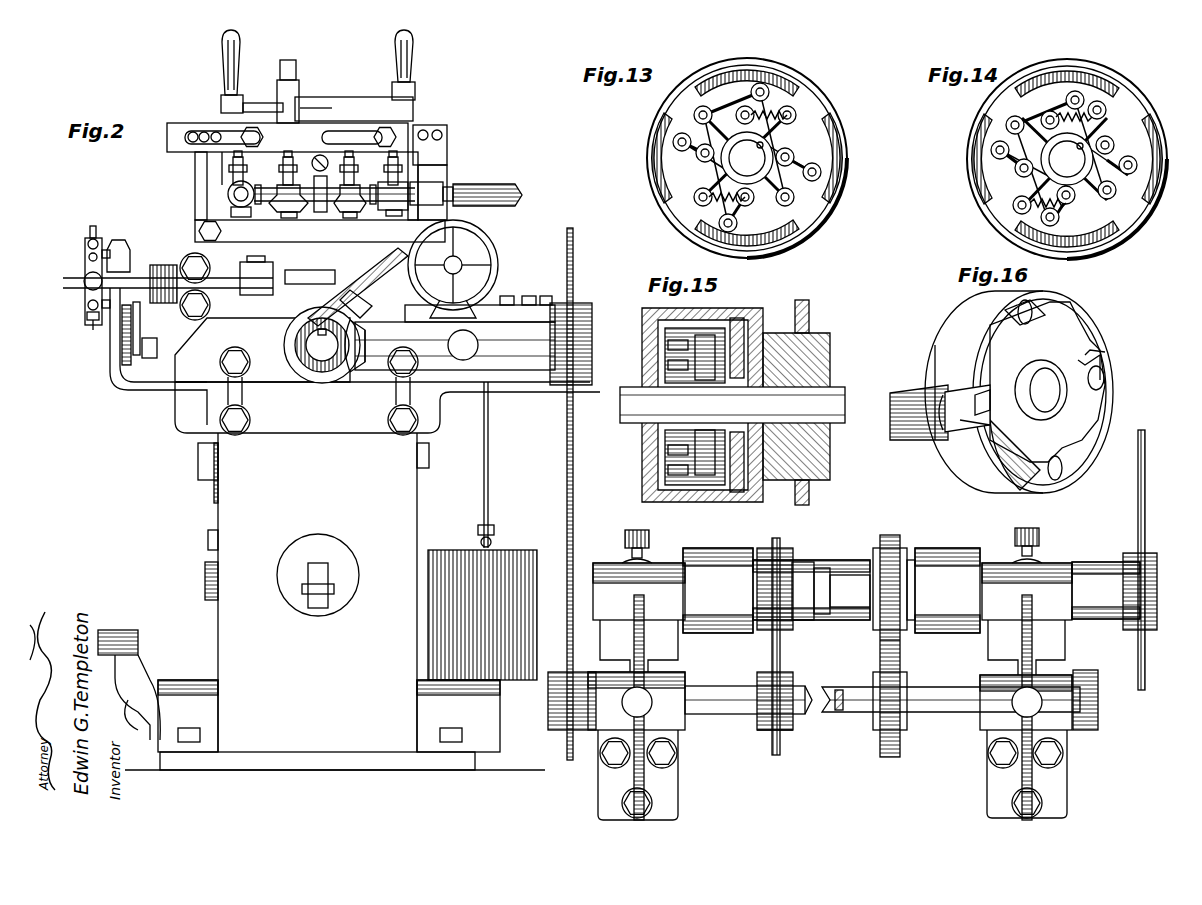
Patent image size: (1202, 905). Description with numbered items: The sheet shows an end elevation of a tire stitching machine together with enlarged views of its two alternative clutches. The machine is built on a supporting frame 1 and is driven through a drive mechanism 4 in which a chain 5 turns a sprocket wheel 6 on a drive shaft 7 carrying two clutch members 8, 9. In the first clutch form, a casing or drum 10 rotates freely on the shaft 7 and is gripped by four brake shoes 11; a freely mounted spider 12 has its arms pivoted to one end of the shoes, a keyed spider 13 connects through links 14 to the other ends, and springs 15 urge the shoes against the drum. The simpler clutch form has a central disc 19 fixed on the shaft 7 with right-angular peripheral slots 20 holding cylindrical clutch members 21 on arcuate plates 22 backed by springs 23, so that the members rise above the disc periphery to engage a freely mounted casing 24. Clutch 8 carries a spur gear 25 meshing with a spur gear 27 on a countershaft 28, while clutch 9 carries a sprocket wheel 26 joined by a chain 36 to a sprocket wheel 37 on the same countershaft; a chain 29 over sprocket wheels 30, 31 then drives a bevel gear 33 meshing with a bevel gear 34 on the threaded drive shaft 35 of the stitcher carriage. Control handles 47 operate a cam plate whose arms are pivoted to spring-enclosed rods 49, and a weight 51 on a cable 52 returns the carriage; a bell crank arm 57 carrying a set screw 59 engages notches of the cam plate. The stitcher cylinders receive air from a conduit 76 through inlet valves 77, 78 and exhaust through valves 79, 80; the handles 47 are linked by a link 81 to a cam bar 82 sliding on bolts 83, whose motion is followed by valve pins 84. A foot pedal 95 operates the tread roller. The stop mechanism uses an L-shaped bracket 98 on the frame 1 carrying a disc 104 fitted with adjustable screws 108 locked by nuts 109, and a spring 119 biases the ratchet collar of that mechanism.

In FIG. 2, the supporting frame 1 is at (250, 503).
In FIG. 2, the drive mechanism 4 is at (822, 759).
In FIG. 2, the chain 5 is at (1138, 500).
In FIG. 2, the sprocket wheel 6 is at (1128, 555).
In FIG. 2, the drive shaft 7 is at (840, 570).
In FIG. 13, the drive shaft 7 is at (747, 158).
In FIG. 14, the drive shaft 7 is at (1067, 159).
In FIG. 15, the drive shaft 7 is at (835, 393).
In FIG. 16, the drive shaft 7 is at (900, 393).
In FIG. 2, the clutch member 8 is at (948, 552).
In FIG. 2, the clutch member 9 is at (718, 560).
In FIG. 13, the casing or drum 10 is at (818, 90).
In FIG. 14, the casing or drum 10 is at (1125, 92).
In FIG. 13, the brake shoes 11 is at (730, 85).
In FIG. 14, the brake shoes 11 is at (1112, 226).
In FIG. 15, the brake shoes 11 is at (745, 312).
In FIG. 13, the spider 12 is at (762, 228).
In FIG. 14, the spider 12 is at (1030, 190).
In FIG. 15, the spider 12 is at (745, 498).
In FIG. 13, the spider 13 is at (780, 150).
In FIG. 14, the spider 13 is at (1100, 130).
In FIG. 13, the links 14 is at (715, 205).
In FIG. 14, the links 14 is at (1120, 140).
In FIG. 15, the links 14 is at (688, 485).
In FIG. 13, the springs 15 is at (780, 102).
In FIG. 14, the springs 15 is at (1085, 105).
In FIG. 15, the springs 15 is at (650, 356).
In FIG. 16, the central disc 19 is at (1058, 332).
In FIG. 16, the peripheral slots 20 is at (1035, 300).
In FIG. 16, the cylindrical clutch members 21 is at (990, 395).
In FIG. 16, the arcuate plates 22 is at (1000, 345).
In FIG. 16, the springs 23 is at (1085, 355).
In FIG. 16, the casing 24 is at (1113, 405).
In FIG. 2, the spur gear 25 is at (890, 535).
In FIG. 2, the sprocket wheel 26 is at (782, 548).
In FIG. 15, the sprocket wheel 26 is at (830, 330).
In FIG. 2, the spur gear 27 is at (900, 665).
In FIG. 2, the countershaft 28 is at (945, 712).
In FIG. 2, the chain 29 is at (573, 488).
In FIG. 2, the sprocket wheel 30 is at (560, 732).
In FIG. 2, the sprocket wheel 31 is at (586, 300).
In FIG. 2, the bevel gear 33 is at (346, 378).
In FIG. 2, the bevel gear 34 is at (310, 378).
In FIG. 2, the threaded drive shaft 35 is at (316, 350).
In FIG. 2, the chain 36 is at (782, 648).
In FIG. 2, the sprocket wheel 37 is at (762, 735).
In FIG. 2, the control handles 47 is at (240, 50).
In FIG. 2, the rods 49 is at (170, 265).
In FIG. 2, the weight 51 is at (450, 562).
In FIG. 2, the cable 52 is at (484, 435).
In FIG. 2, the bell crank arm 57 is at (62, 274).
In FIG. 2, the set screw 59 is at (86, 290).
In FIG. 2, the air conduit 76 is at (500, 185).
In FIG. 2, the inlet valve 77 is at (420, 193).
In FIG. 2, the inlet valve 78 is at (228, 191).
In FIG. 2, the exhaust valve 79 is at (288, 212).
In FIG. 2, the exhaust valve 80 is at (362, 212).
In FIG. 2, the link 81 is at (362, 97).
In FIG. 2, the cam bar 82 is at (180, 121).
In FIG. 2, the bolts 83 is at (265, 137).
In FIG. 2, the pins 84 is at (232, 158).
In FIG. 2, the foot pedal 95 is at (125, 628).
In FIG. 2, the bracket 98 is at (168, 400).
In FIG. 2, the disc 104 is at (88, 318).
In FIG. 2, the adjustable screws 108 is at (96, 232).
In FIG. 2, the nuts 109 is at (104, 247).
In FIG. 2, the spring 119 is at (124, 330).